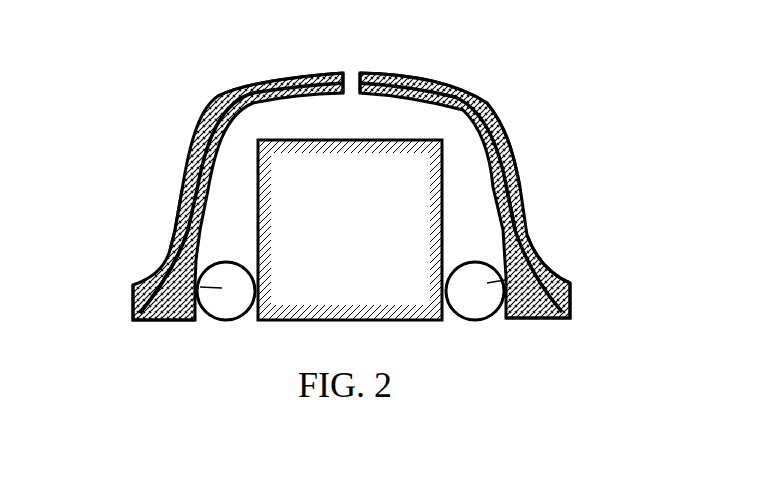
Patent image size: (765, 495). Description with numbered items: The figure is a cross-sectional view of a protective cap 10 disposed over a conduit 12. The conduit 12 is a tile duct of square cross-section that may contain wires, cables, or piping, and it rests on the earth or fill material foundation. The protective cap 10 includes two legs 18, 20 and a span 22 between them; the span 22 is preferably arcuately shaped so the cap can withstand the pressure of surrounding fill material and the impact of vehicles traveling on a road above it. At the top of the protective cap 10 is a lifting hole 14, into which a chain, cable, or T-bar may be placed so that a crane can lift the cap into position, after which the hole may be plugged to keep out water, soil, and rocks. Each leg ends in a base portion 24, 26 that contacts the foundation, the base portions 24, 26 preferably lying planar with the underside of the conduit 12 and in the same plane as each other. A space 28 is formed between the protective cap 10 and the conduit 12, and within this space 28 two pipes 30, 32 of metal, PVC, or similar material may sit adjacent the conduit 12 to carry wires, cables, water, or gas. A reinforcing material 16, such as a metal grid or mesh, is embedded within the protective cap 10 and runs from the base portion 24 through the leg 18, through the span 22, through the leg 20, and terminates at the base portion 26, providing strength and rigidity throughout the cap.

The protective cap 10 is at (252, 70).
The conduit 12 is at (366, 284).
The lifting hole 14 is at (353, 72).
The reinforcing material 16 is at (505, 122).
The leg 18 is at (520, 175).
The leg 20 is at (178, 225).
The span 22 is at (227, 82).
The base portion 24 is at (547, 318).
The base portion 26 is at (158, 318).
The space 28 is at (473, 85).
The pipe 30 is at (525, 242).
The pipe 32 is at (170, 258).